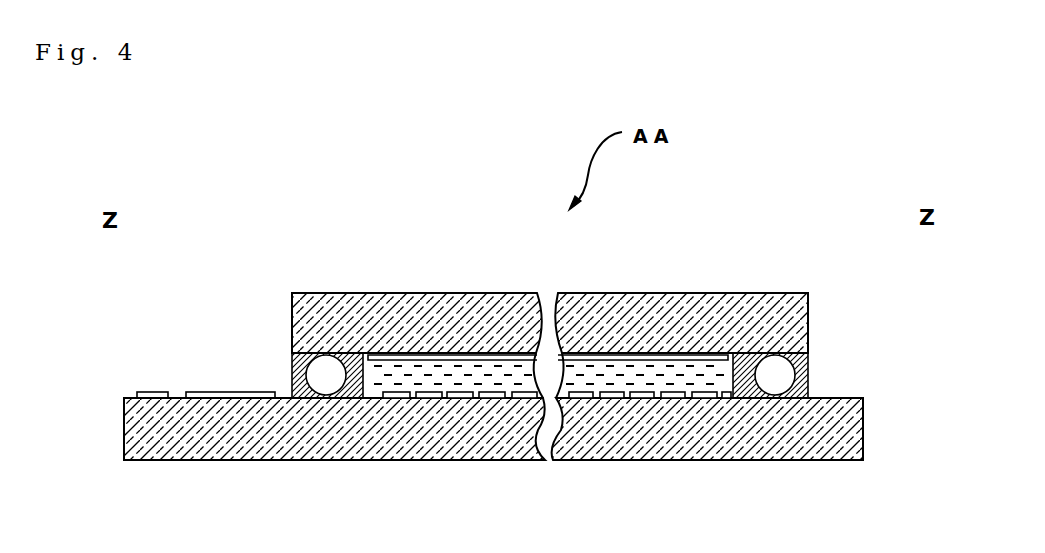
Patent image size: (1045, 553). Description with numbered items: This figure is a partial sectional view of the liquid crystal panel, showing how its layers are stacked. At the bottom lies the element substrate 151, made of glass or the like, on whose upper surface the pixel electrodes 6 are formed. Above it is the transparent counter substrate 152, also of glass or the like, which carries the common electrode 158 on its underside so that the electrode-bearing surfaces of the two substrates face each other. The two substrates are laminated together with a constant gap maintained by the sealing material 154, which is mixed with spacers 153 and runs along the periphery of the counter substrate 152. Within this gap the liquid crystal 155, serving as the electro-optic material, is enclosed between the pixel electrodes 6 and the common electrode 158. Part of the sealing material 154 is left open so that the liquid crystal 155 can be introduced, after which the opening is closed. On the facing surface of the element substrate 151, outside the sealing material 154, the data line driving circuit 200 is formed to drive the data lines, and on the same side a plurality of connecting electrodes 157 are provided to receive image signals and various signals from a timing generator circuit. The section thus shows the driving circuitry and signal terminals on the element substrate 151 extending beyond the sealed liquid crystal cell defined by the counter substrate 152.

The element substrate 151 is at (415, 440).
The counter substrate 152 is at (374, 312).
The spacers 153 is at (290, 362).
The sealing material 154 is at (320, 373).
The liquid crystal 155 is at (475, 372).
The common electrode 158 is at (410, 358).
The pixel electrodes 6 is at (444, 393).
The connecting electrodes 157 is at (155, 392).
The data line driving circuit 200 is at (218, 392).